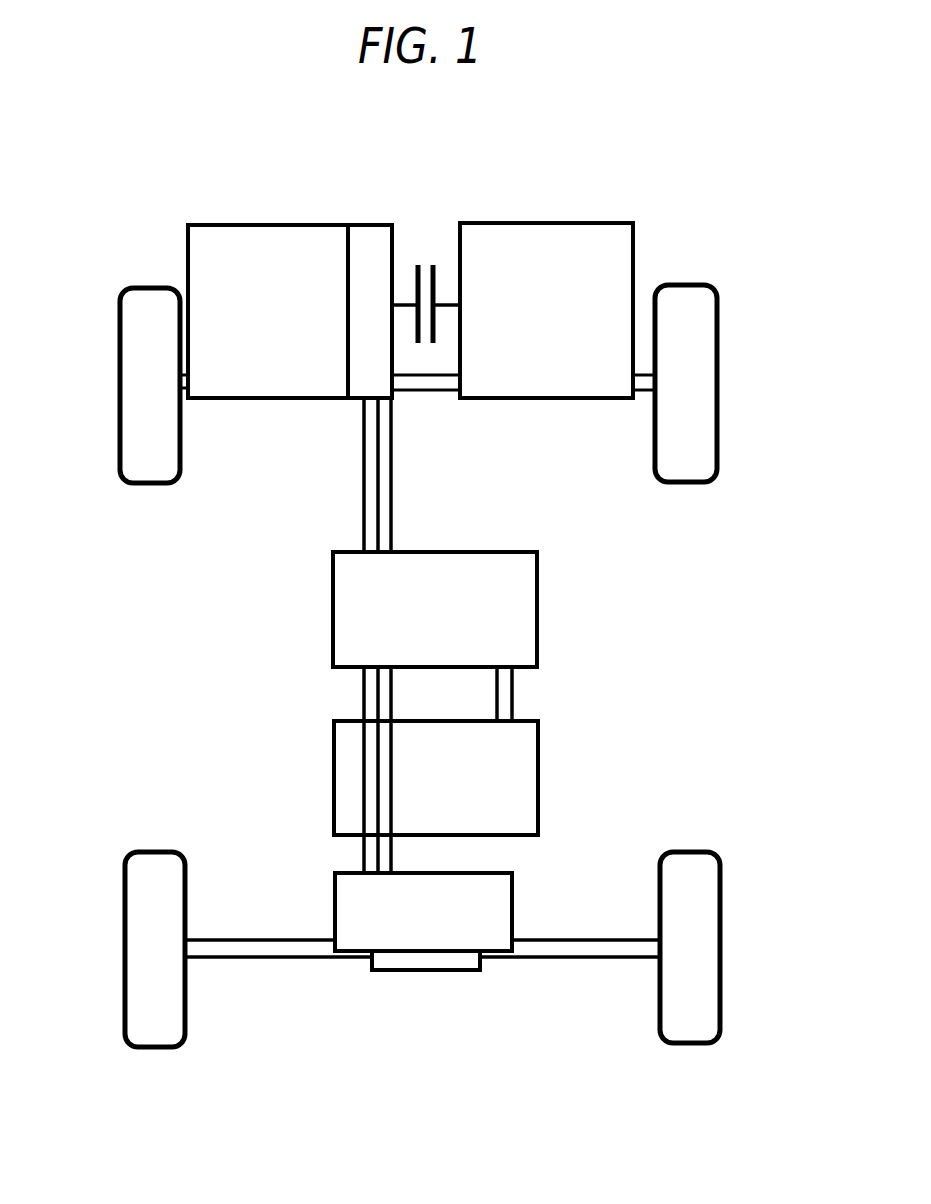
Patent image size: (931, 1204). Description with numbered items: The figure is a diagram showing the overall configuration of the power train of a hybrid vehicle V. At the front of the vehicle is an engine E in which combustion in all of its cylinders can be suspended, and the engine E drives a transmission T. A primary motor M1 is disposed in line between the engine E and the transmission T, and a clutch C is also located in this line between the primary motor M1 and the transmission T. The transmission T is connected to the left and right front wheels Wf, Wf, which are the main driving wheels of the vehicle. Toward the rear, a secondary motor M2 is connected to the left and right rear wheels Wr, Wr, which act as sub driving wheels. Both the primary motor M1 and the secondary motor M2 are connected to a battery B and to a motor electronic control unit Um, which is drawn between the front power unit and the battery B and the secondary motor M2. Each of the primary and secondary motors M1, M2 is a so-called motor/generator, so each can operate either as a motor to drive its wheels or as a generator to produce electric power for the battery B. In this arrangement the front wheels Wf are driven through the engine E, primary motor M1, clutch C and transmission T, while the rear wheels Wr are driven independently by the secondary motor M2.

The engine E is at (263, 223).
The primary motor M1 is at (365, 223).
The clutch C is at (425, 262).
The transmission T is at (546, 221).
The front wheels Wf is at (120, 384).
The motor electronic control unit Um is at (537, 605).
The battery B is at (538, 775).
The secondary motor M2 is at (512, 905).
The rear wheels Wr is at (125, 950).
The hybrid vehicle V is at (598, 687).